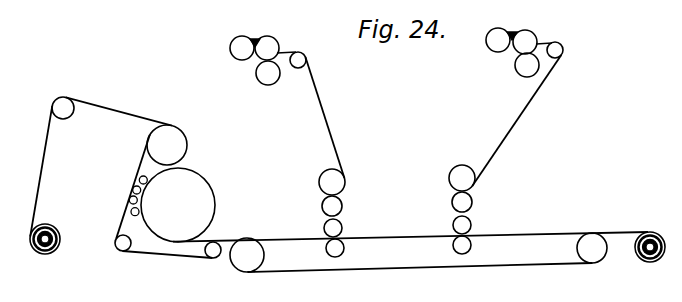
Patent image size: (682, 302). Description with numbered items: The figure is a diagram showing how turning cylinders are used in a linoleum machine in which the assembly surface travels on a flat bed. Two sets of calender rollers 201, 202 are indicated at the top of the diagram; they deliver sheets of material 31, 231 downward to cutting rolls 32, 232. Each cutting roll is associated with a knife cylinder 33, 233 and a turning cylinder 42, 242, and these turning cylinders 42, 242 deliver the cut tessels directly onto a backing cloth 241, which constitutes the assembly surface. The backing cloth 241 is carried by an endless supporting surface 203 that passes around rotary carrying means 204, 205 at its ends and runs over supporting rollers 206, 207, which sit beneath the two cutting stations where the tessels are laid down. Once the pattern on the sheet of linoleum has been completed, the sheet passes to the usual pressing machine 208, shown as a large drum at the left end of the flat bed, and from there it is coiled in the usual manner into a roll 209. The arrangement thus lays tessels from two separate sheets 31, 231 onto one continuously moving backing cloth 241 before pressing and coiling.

The set of calender rollers 201 is at (271, 49).
The set of calender rollers 202 is at (536, 44).
The sheet of material 31 is at (323, 103).
The sheet of material 231 is at (530, 108).
The cutting roll 32 is at (323, 173).
The knife cylinder 33 is at (326, 206).
The turning cylinder 42 is at (330, 228).
The supporting roller 206 is at (328, 247).
The cutting roll 232 is at (459, 172).
The knife cylinder 233 is at (470, 198).
The turning cylinder 242 is at (472, 221).
The supporting roller 207 is at (456, 245).
The endless supporting surface 203 is at (533, 265).
The backing cloth 241 is at (615, 231).
The rotary carrying means 204 is at (250, 244).
The rotary carrying means 205 is at (592, 252).
The pressing machine 208 is at (209, 184).
The roll 209 is at (47, 230).